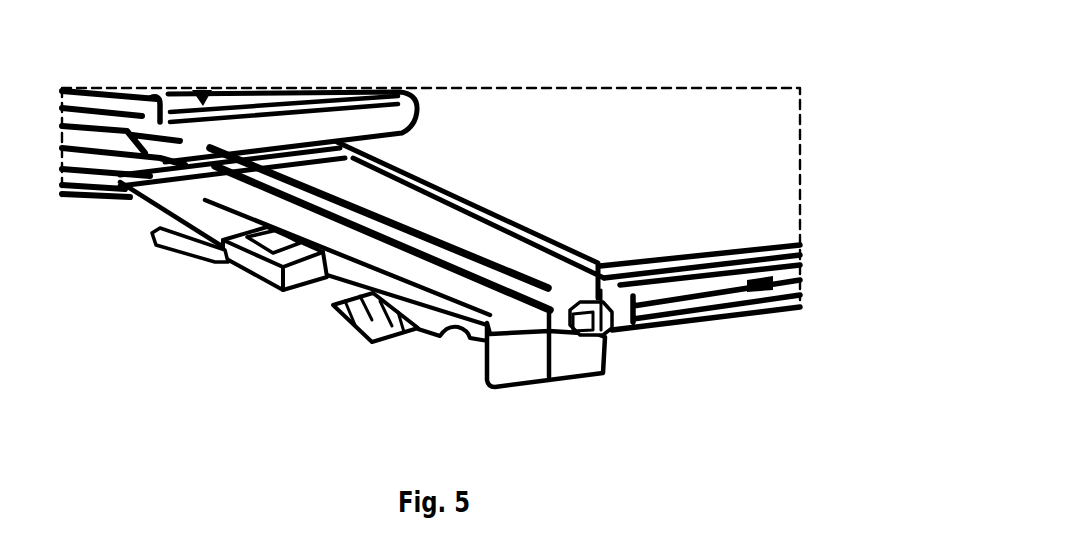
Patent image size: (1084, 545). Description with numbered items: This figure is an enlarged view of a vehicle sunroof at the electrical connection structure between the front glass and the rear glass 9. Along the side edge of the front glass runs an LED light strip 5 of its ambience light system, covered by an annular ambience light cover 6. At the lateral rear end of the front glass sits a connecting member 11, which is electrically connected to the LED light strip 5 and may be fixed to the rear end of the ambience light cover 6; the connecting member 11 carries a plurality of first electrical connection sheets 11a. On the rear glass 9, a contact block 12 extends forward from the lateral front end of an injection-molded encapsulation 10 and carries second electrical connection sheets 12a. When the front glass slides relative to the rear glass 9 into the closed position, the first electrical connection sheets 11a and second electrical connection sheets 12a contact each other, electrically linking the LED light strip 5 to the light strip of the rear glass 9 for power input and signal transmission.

The LED light strip 5 is at (108, 110).
The ambience light cover 6 is at (322, 120).
The rear glass 9 is at (660, 126).
The injection-molded encapsulation 10 is at (517, 363).
The connecting member 11 is at (262, 283).
The first electrical connection sheet 11a is at (290, 246).
The contact block 12 is at (407, 322).
The second electrical connection sheet 12a is at (352, 340).